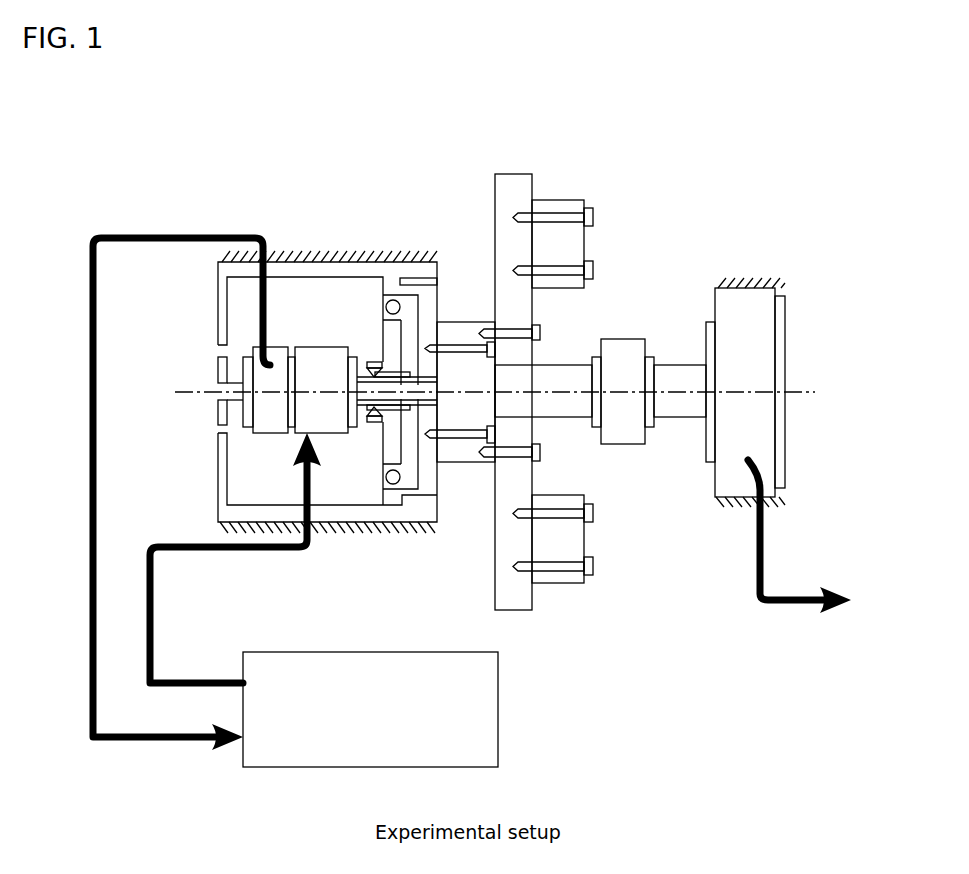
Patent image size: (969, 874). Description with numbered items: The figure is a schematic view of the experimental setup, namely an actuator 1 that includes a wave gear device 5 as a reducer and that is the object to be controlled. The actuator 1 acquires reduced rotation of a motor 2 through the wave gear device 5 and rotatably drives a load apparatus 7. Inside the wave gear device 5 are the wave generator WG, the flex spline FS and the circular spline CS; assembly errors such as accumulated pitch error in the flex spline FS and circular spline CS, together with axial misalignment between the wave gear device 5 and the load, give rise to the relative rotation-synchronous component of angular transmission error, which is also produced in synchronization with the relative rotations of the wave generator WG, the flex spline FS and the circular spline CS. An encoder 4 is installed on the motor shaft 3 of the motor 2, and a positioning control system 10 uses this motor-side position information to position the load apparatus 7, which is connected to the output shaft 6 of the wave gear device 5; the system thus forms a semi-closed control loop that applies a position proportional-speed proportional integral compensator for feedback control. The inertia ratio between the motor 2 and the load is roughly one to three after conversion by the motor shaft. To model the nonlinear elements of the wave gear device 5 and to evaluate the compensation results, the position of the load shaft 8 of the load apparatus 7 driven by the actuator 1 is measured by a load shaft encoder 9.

The actuator 1 is at (519, 150).
The motor 2 is at (312, 344).
The motor shaft 3 is at (371, 364).
The encoder 4 is at (259, 437).
The wave gear device 5 is at (370, 297).
The output shaft 6 is at (465, 457).
The load apparatus 7 is at (600, 235).
The load shaft 8 is at (676, 416).
The load shaft encoder 9 is at (709, 301).
The positioning control system 10 is at (510, 682).
The circular spline CS is at (402, 281).
The flex spline FS is at (433, 308).
The wave generator WG is at (379, 451).